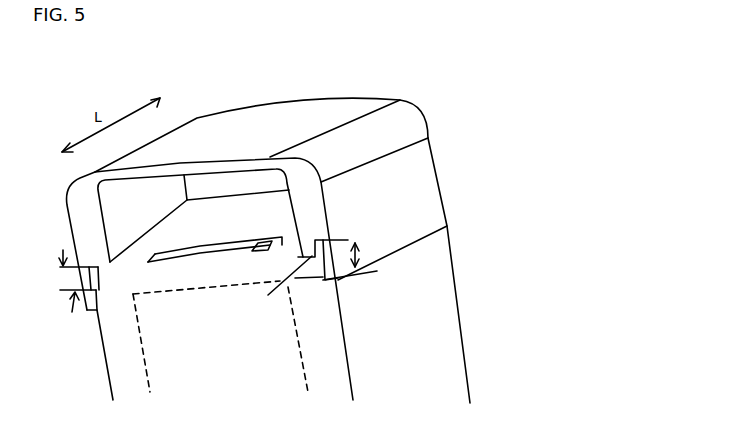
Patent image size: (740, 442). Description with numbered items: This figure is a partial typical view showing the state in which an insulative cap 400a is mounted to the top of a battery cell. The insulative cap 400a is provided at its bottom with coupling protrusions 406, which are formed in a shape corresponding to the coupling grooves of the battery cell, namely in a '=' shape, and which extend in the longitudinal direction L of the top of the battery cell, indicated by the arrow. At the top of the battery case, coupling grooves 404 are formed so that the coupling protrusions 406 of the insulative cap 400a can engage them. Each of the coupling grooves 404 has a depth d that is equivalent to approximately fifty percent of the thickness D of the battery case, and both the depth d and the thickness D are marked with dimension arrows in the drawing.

The insulative cap 400a is at (424, 110).
The coupling grooves 404 is at (136, 293).
The coupling protrusions 406 is at (277, 293).